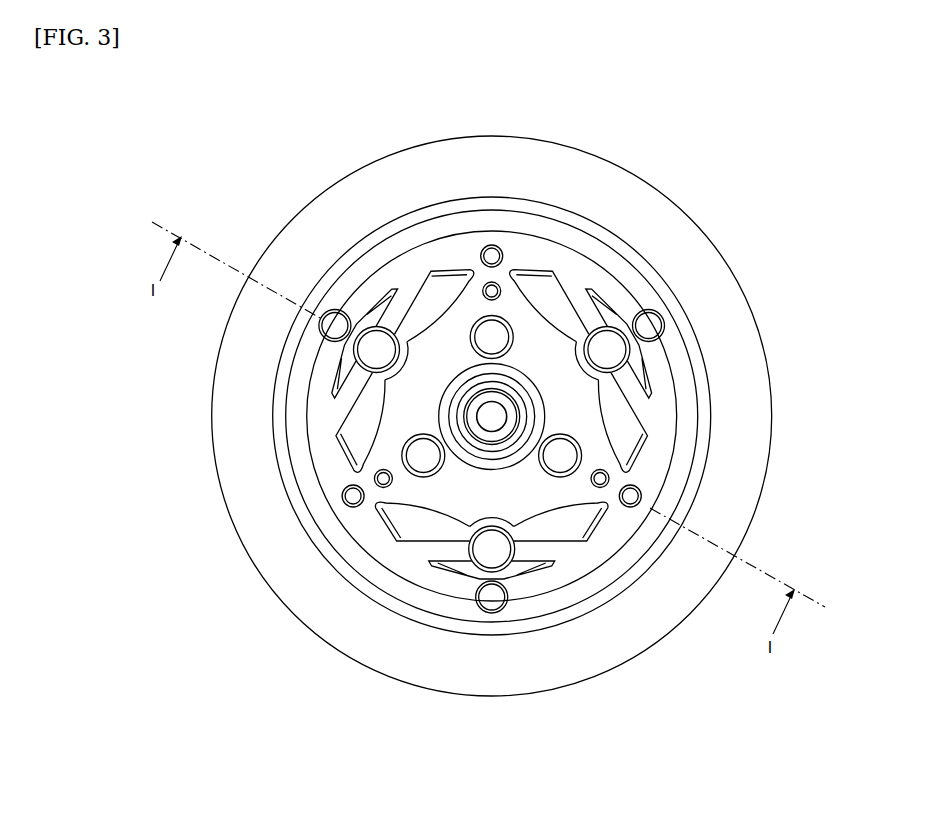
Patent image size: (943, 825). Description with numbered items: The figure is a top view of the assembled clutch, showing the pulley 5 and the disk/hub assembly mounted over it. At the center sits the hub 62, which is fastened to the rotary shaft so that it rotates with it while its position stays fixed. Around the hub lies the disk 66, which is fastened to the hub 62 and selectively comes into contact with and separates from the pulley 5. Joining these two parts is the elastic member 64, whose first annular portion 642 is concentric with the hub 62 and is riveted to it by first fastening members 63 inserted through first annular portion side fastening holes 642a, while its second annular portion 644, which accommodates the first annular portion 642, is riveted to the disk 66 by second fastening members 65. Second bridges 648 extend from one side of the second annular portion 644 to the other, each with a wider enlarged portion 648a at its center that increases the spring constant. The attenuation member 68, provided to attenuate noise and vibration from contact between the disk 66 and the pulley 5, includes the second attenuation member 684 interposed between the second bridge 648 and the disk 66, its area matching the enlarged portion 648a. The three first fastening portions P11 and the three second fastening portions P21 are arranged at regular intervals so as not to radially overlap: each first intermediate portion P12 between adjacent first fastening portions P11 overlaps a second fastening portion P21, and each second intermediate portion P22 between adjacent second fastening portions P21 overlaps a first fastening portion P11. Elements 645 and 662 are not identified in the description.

The pulley 5 is at (229, 361).
The hub 62 is at (464, 424).
The first fastening member 63 is at (408, 453).
The elastic member 64 is at (323, 448).
The second fastening member 65 is at (488, 614).
The disk 66 is at (291, 420).
The attenuation member 68 is at (378, 488).
The first annular portion 642 is at (440, 338).
The first annular portion side fastening hole 642a is at (605, 312).
The second annular portion 644 is at (443, 248).
The hole 645 is at (473, 280).
The second bridge 648 is at (585, 305).
The enlarged portion 648a is at (640, 342).
The hole 662 is at (348, 506).
The second attenuation member 684 is at (486, 562).
The first fastening portion P11 is at (495, 307).
The first intermediate portion P12 is at (590, 392).
The second fastening portion P21 is at (645, 309).
The second intermediate portion P22 is at (490, 238).